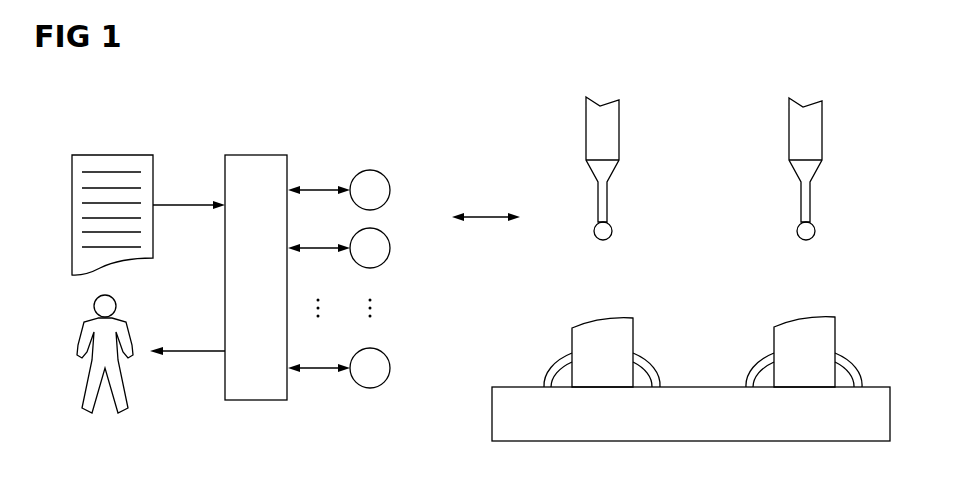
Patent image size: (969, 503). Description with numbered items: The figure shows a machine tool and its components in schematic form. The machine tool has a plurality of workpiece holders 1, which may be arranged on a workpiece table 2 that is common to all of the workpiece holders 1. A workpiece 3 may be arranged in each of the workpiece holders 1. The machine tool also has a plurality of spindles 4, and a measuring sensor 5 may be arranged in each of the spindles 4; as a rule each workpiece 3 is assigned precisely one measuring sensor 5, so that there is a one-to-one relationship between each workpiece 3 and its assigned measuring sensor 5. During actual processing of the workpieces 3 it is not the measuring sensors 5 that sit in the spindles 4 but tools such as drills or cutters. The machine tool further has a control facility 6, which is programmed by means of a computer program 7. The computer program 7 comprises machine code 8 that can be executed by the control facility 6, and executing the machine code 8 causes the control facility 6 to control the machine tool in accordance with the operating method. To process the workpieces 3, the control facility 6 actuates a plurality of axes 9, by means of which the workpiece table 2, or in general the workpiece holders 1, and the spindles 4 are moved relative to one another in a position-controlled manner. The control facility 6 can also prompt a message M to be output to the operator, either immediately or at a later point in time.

The workpiece holder 1 is at (668, 322).
The workpiece table 2 is at (492, 415).
The workpiece 3 is at (572, 347).
The spindle 4 is at (619, 135).
The measuring sensor 5 is at (594, 229).
The control facility 6 is at (258, 155).
The computer program 7 is at (116, 155).
The machine code 8 is at (92, 219).
The axes 9 is at (390, 190).
The message M is at (197, 351).